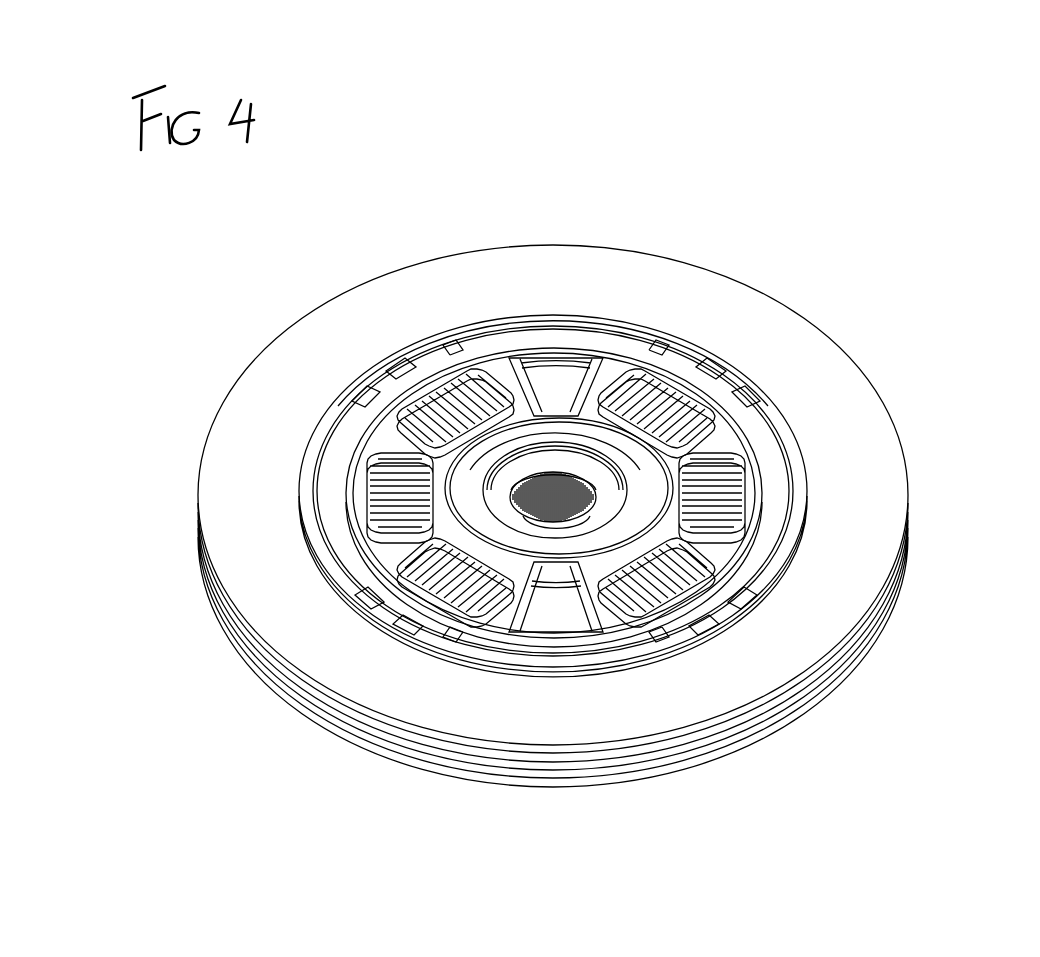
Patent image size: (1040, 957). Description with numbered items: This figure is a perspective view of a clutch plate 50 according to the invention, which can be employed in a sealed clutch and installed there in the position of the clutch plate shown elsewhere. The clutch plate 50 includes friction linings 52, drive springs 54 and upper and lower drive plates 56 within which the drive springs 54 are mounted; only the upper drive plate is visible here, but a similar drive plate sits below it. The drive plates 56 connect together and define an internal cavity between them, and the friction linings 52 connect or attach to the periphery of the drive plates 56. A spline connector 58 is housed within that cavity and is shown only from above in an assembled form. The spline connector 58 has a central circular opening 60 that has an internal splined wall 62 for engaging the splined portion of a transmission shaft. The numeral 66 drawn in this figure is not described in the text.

The clutch plate 50 is at (851, 170).
The friction linings 52 is at (547, 280).
The drive springs 54 is at (392, 502).
The drive plates 56 is at (608, 370).
The spline connector 58 is at (602, 497).
The central circular opening 60 is at (533, 480).
The internal splined wall 62 is at (573, 510).
The inner ring 66 is at (503, 497).